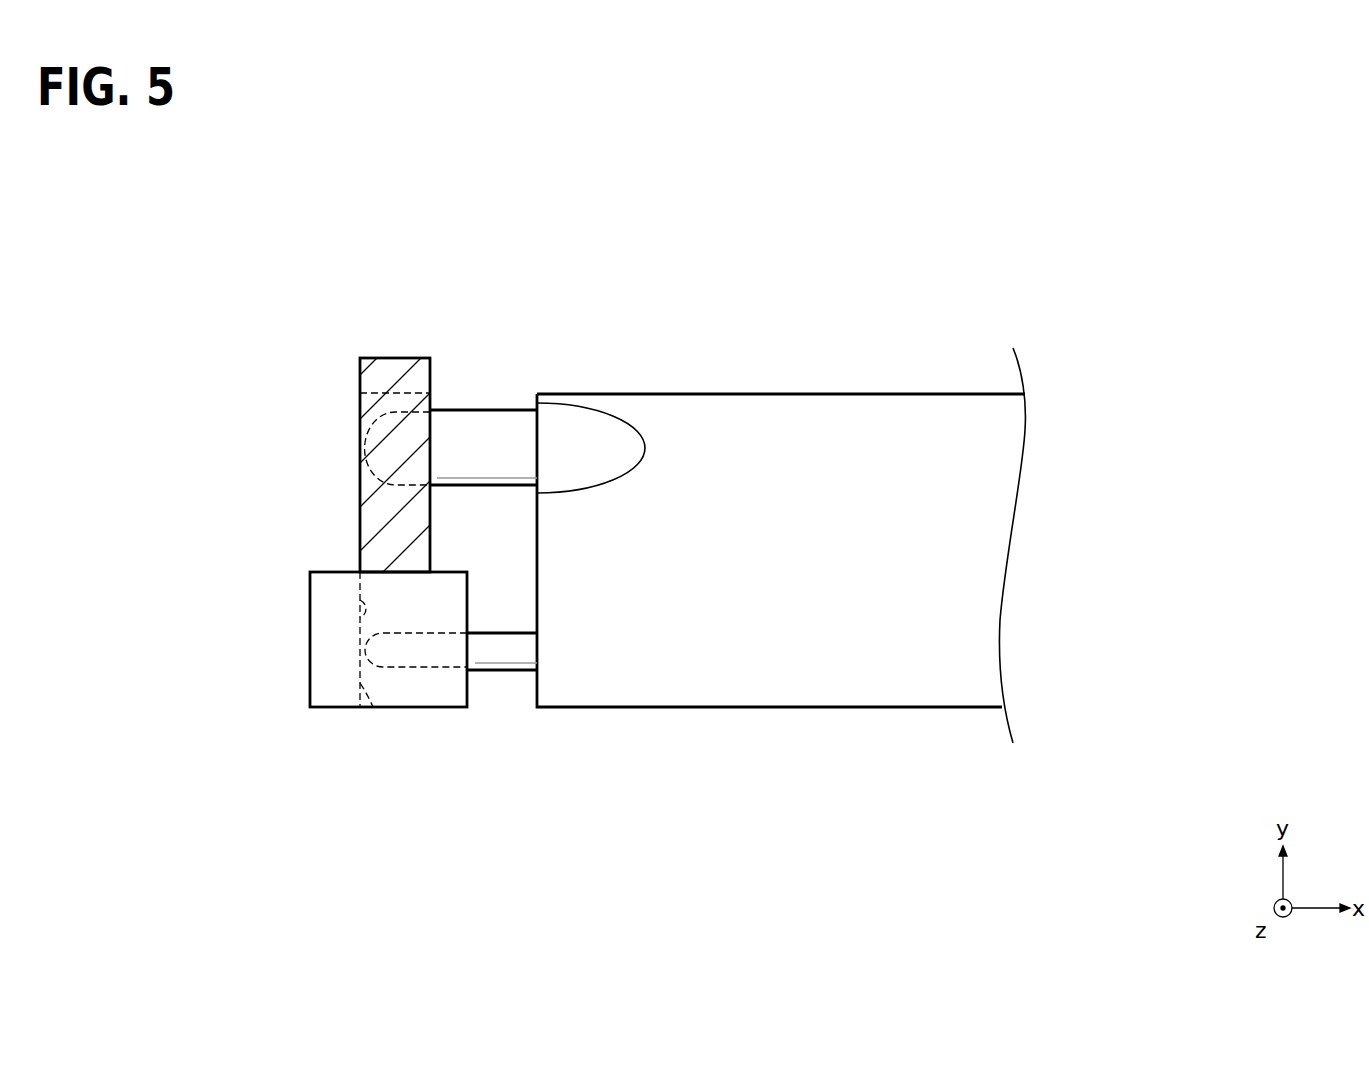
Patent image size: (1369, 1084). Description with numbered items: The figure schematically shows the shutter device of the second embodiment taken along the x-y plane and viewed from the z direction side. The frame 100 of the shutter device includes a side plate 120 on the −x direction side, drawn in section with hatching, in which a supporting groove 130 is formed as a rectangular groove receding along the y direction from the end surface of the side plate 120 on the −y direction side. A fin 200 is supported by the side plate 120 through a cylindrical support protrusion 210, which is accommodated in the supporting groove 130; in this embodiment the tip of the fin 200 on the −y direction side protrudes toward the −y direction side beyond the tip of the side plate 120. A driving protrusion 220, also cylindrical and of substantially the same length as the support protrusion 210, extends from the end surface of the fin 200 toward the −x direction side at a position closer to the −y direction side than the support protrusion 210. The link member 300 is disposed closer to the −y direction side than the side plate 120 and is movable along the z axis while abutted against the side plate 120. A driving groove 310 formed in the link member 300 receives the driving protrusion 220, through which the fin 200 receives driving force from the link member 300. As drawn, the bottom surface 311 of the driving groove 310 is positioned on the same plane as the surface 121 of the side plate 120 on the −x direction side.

The frame 100 is at (337, 415).
The side plate 120 is at (335, 465).
The surface of the side plate 121 is at (358, 513).
The supporting groove 130 is at (358, 410).
The fin 200 is at (800, 417).
The support protrusion 210 is at (470, 424).
The driving protrusion 220 is at (500, 653).
The link member 300 is at (335, 714).
The driving groove 310 is at (375, 708).
The bottom surface of the driving groove 311 is at (362, 602).